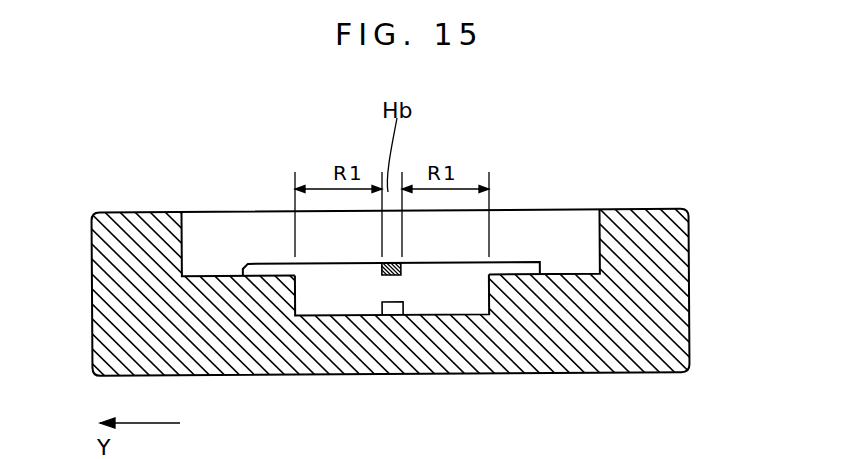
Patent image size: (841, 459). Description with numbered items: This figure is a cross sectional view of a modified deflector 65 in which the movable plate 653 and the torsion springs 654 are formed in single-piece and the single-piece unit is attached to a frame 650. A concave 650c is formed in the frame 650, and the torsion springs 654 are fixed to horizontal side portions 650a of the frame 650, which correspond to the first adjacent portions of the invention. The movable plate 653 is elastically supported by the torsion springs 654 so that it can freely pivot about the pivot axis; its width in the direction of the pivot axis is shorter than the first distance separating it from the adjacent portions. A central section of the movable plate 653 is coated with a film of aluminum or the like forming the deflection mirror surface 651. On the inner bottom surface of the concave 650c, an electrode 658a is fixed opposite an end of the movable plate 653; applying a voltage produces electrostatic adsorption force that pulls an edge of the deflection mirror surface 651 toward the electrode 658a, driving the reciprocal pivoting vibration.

The deflector 65 is at (420, 280).
The frame 650 is at (420, 280).
The horizontal side portions 650a is at (253, 290).
The concave 650c is at (317, 315).
The deflection mirror surface 651 is at (498, 347).
The movable plate 653 is at (397, 275).
The torsion springs 654 is at (441, 272).
The electrode 658a is at (391, 308).